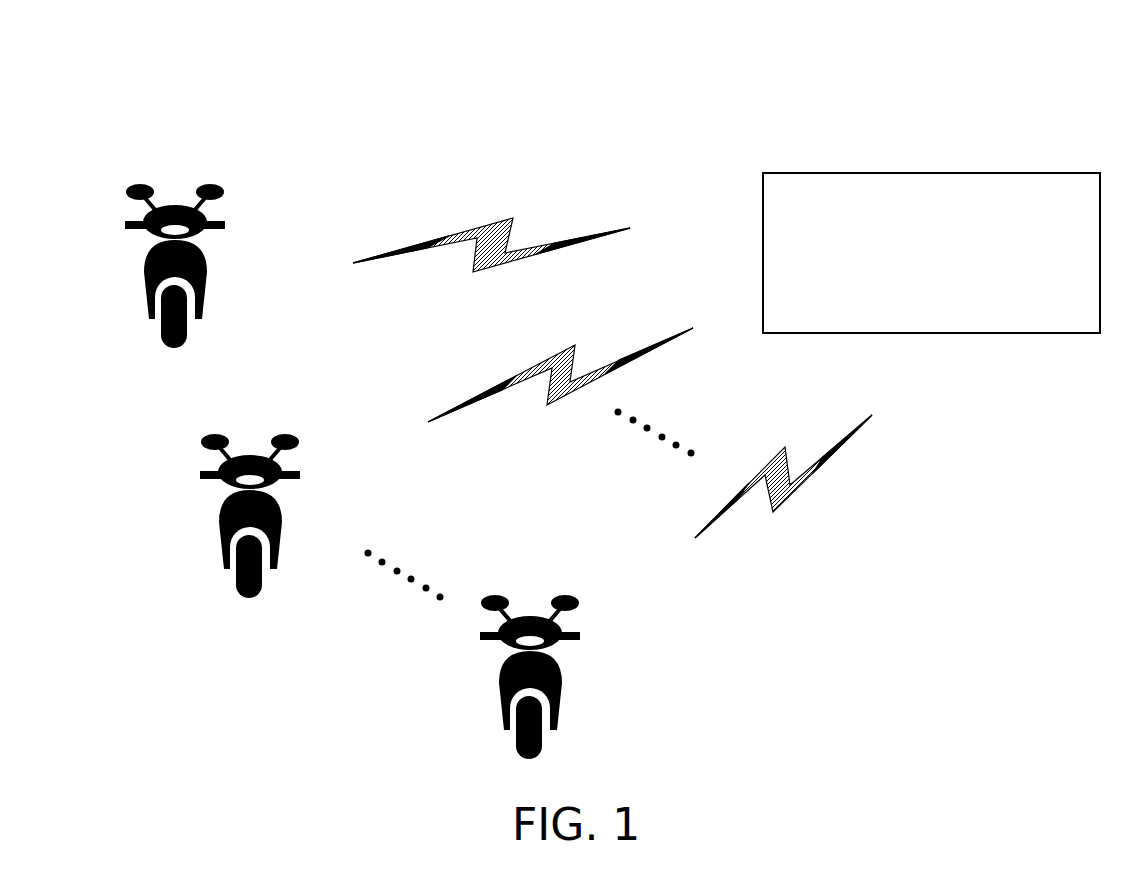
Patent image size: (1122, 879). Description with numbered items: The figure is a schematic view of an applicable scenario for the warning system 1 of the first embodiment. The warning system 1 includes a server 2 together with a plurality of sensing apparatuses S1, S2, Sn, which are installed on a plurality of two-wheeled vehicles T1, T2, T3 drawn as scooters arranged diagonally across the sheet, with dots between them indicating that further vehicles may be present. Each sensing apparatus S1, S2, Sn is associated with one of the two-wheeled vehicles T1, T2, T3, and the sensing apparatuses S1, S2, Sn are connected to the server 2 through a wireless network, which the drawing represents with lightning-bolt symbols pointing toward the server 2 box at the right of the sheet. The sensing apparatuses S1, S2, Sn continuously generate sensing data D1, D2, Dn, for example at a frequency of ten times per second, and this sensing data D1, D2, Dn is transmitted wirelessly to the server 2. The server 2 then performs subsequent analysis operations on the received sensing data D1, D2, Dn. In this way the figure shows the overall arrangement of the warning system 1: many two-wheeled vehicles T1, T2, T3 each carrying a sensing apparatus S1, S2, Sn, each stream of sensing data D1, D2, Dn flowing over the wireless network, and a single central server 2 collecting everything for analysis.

The warning system 1 is at (600, 90).
The server 2 is at (939, 285).
The two-wheeled vehicle T1 is at (157, 160).
The two-wheeled vehicle T2 is at (248, 430).
The terminal device of third vehicle T3 is at (533, 592).
The sensing apparatus S1 is at (228, 292).
The sensing apparatus S2 is at (313, 542).
The sensing apparatus Sn is at (592, 697).
The sensing data D1 is at (491, 225).
The sensing data D2 is at (560, 364).
The sensing data Dn is at (783, 472).